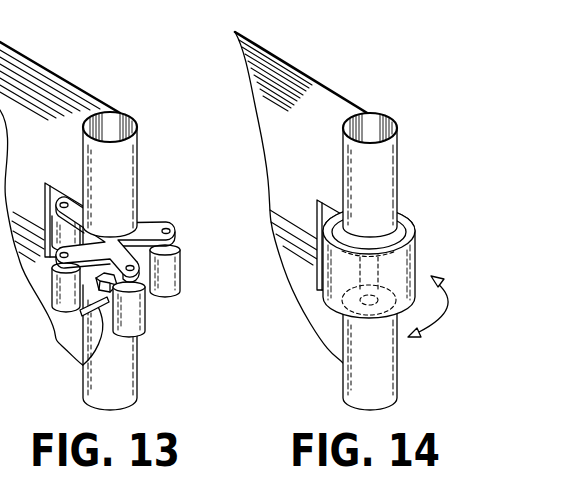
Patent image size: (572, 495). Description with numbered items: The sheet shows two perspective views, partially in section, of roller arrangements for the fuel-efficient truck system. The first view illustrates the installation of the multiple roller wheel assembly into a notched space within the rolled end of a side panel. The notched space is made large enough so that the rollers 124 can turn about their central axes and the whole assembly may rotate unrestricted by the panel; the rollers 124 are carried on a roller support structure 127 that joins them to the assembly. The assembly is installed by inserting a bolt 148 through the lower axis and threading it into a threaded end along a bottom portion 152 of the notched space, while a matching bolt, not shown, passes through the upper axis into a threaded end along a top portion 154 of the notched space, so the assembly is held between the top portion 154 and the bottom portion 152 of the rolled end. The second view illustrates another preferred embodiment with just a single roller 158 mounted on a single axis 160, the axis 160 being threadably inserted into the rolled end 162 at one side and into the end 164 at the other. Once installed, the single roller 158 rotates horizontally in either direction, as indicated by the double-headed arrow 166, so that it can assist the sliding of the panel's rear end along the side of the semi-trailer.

In FIG. 13, the rollers 124 is at (145, 315).
In FIG. 13, the roller support plate 127 is at (178, 310).
In FIG. 13, the bolt 148 is at (80, 370).
In FIG. 13, the bottom portion 152 is at (138, 353).
In FIG. 13, the top portion 154 is at (138, 158).
In FIG. 14, the single roller 158 is at (415, 255).
In FIG. 14, the single axis 160 is at (418, 214).
In FIG. 14, the rolled end 162 is at (398, 200).
In FIG. 14, the end 164 is at (396, 385).
In FIG. 14, the arrow 166 is at (440, 310).